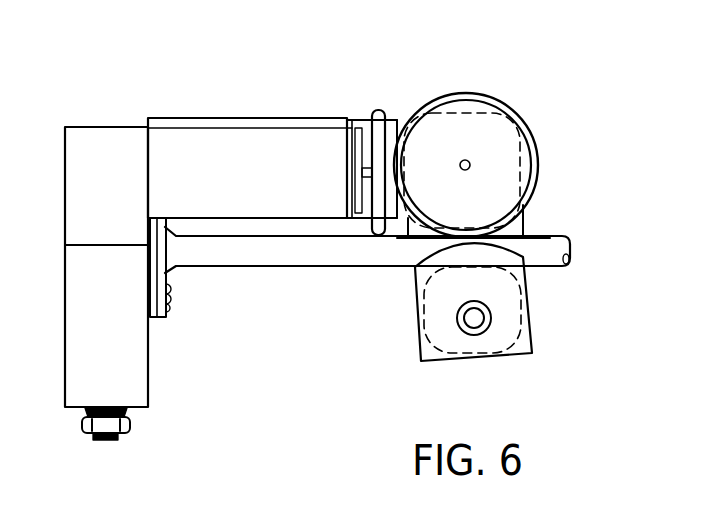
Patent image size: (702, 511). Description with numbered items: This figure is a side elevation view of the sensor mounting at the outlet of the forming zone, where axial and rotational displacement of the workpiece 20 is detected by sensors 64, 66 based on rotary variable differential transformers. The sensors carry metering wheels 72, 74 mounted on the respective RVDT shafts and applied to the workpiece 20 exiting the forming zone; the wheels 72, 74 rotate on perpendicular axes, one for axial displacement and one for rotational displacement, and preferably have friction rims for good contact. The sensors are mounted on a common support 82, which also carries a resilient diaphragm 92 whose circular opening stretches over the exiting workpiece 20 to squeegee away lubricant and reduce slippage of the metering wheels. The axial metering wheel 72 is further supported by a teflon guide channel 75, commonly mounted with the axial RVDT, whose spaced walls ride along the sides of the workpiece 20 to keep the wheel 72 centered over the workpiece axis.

The workpiece 20 is at (548, 238).
The sensor 64 is at (511, 96).
The sensor 66 is at (218, 117).
The axial metering wheel 72 is at (527, 137).
The metering wheel 74 is at (377, 109).
The guide channel 75 is at (533, 330).
The common support 82 is at (90, 126).
The resilient diaphragm 92 is at (170, 272).